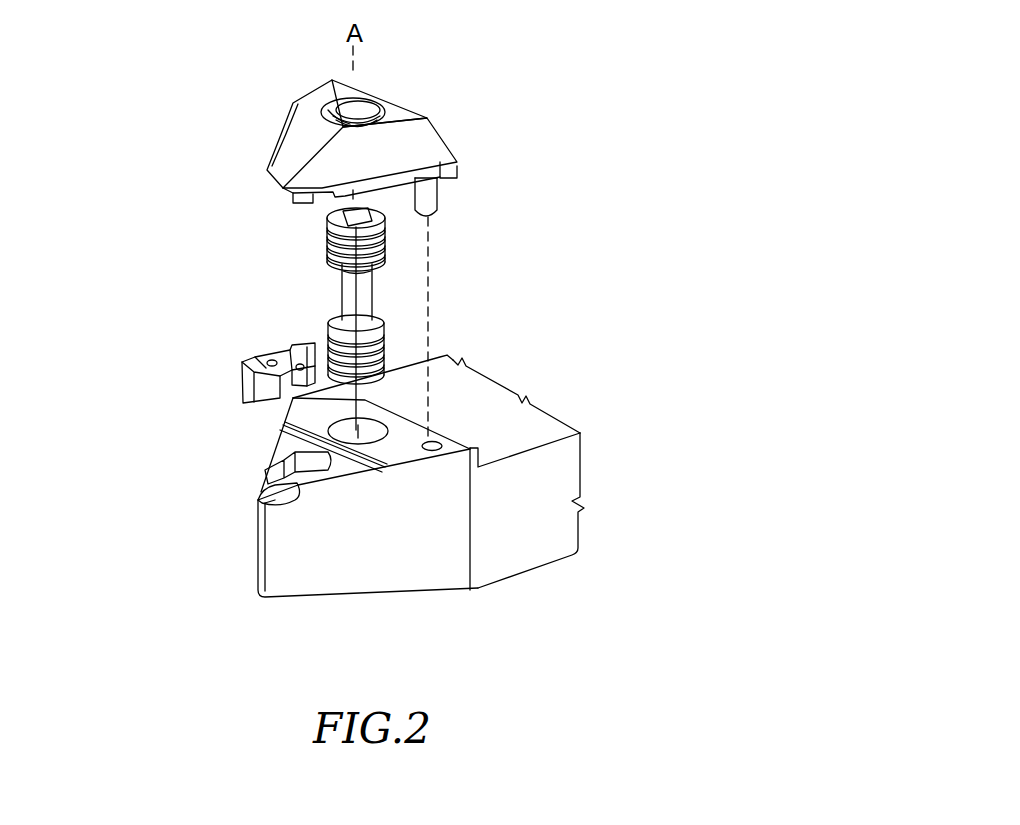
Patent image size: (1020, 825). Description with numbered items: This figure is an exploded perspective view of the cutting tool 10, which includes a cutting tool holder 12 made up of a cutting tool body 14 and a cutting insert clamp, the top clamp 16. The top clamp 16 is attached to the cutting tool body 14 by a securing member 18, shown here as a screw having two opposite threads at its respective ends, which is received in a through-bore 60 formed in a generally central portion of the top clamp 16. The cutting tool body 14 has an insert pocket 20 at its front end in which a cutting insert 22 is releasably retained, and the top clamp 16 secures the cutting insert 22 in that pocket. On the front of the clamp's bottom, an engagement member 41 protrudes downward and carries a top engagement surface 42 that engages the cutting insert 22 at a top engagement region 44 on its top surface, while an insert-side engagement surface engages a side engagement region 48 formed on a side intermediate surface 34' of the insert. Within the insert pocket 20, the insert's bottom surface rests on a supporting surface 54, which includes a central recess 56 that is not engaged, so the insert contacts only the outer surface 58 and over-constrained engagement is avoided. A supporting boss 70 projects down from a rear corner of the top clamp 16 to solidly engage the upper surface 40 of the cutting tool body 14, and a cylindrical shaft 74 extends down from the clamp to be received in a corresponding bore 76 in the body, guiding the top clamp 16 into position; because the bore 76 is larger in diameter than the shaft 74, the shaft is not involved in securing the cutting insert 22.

The cutting tool 10 is at (192, 622).
The cutting tool holder 12 is at (410, 288).
The cutting tool body 14 is at (612, 460).
The top clamp 16 is at (412, 88).
The securing member 18 is at (342, 290).
The insert pocket 20 is at (296, 448).
The cutting insert 22 is at (218, 396).
The side intermediate surface 34' is at (278, 373).
The side engagement region 48 is at (282, 343).
The upper surface 40 is at (400, 470).
The engagement member 41 is at (270, 184).
The top engagement surface 42 is at (290, 192).
The top engagement region 44 is at (268, 356).
The supporting surface 54 is at (275, 466).
The central recess 56 is at (260, 490).
The outer surface 58 is at (273, 503).
The through-bore 60 is at (330, 100).
The supporting boss 70 is at (455, 177).
The shaft 74 is at (430, 188).
The bore 76 is at (440, 451).